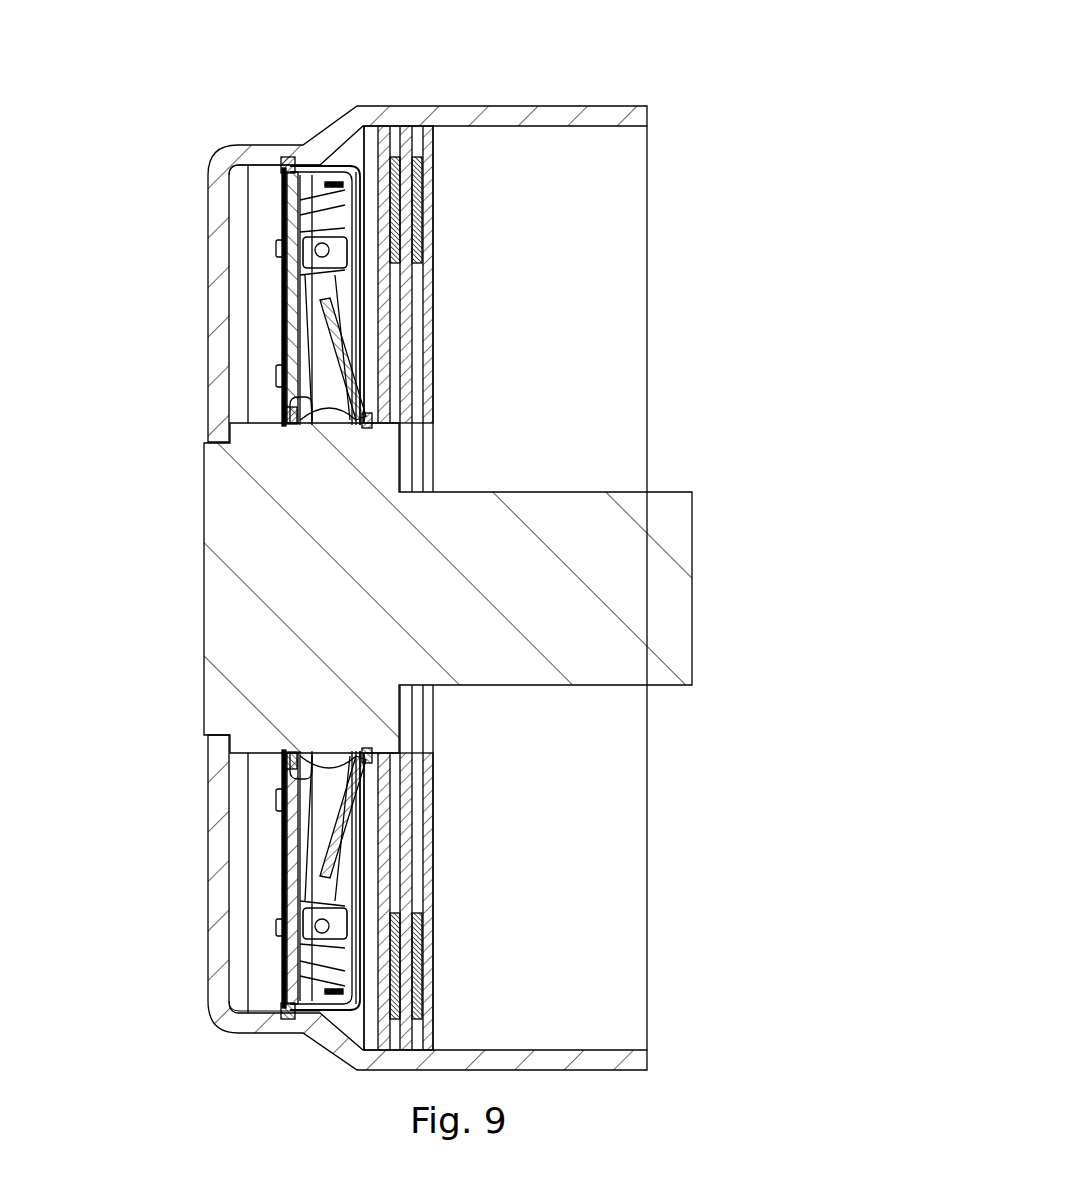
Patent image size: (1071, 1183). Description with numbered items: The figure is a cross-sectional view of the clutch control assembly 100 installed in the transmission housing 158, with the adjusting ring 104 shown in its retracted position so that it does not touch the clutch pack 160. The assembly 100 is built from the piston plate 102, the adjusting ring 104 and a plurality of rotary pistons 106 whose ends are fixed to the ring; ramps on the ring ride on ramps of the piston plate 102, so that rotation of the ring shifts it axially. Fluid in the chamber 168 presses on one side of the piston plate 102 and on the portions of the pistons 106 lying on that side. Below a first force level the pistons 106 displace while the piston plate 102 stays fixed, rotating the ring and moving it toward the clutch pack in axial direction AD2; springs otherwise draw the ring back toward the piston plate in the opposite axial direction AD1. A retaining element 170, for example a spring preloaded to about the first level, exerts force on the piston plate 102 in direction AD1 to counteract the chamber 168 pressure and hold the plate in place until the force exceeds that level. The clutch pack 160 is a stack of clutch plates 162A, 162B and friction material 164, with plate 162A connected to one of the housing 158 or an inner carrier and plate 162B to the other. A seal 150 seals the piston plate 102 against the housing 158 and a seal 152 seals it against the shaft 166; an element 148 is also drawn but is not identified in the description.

The clutch control assembly 100 is at (180, 78).
The piston plate 102 is at (313, 160).
The adjusting ring 104 is at (305, 166).
The pistons 106 is at (278, 230).
The friction plate 148 is at (288, 302).
The seal 150 is at (229, 160).
The seal 152 is at (278, 408).
The transmission housing 158 is at (604, 105).
The clutch pack 160 is at (455, 194).
The clutch plate 162A is at (428, 223).
The clutch plate 162B is at (422, 240).
The friction material 164 is at (426, 168).
The shaft 166 is at (204, 590).
The chamber 168 is at (265, 855).
The retaining element 170 is at (282, 393).
The axial direction AD1 is at (720, 930).
The axial direction AD2 is at (707, 969).